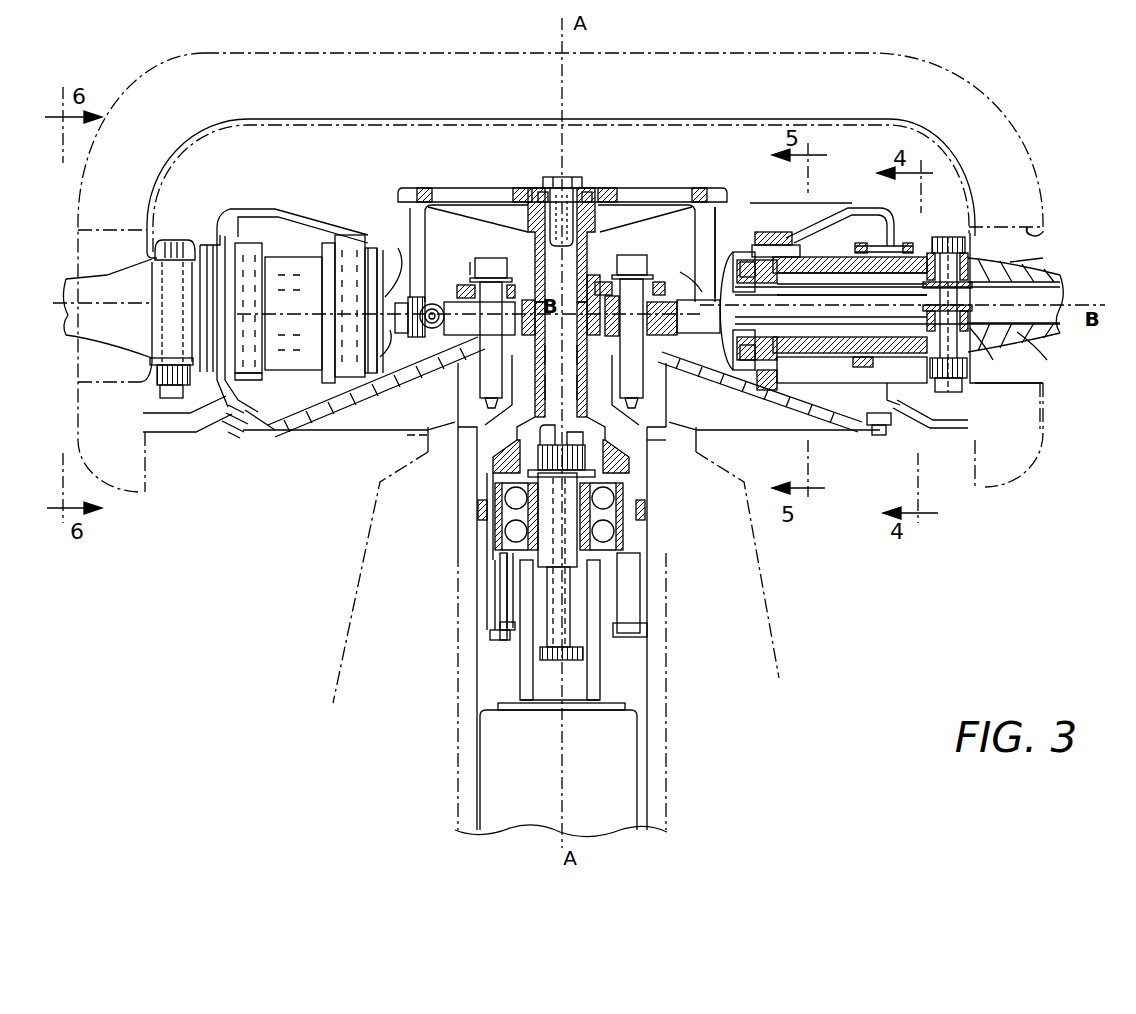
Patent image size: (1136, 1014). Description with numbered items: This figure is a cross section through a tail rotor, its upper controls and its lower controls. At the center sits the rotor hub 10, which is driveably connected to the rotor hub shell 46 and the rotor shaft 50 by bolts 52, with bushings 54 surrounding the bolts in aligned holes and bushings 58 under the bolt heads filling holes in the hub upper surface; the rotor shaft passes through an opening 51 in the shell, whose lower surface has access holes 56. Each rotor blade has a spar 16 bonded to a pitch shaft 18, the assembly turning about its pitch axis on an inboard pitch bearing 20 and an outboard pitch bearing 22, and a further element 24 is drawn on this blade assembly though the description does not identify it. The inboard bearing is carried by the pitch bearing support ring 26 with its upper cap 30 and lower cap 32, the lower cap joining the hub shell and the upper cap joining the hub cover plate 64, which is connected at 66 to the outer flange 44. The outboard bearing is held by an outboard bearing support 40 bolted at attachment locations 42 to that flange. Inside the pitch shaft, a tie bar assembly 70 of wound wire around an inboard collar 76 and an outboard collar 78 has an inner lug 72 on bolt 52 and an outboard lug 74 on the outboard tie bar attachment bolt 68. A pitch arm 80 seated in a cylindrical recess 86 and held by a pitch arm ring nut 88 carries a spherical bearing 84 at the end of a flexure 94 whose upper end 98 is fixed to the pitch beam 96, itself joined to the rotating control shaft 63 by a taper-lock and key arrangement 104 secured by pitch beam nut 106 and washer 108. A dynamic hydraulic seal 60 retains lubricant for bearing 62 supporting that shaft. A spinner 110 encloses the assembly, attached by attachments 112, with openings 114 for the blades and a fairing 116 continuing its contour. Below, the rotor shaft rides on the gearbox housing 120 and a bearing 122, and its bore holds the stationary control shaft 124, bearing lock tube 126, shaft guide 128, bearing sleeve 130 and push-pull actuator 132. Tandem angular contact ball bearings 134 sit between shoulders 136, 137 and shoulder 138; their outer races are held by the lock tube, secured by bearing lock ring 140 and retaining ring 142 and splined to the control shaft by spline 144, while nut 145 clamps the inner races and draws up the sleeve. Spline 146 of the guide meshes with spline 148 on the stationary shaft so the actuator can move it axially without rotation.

The rotor hub 10 is at (526, 340).
The spar 16 is at (1058, 345).
The pitch shaft 18 is at (824, 366).
The inboard pitch bearing 20 is at (750, 262).
The outboard pitch bearing 22 is at (930, 237).
The wheel hub assembly 24 is at (292, 257).
The pitch bearing support ring 26 is at (746, 231).
The upper cap 30 is at (770, 245).
The lower cap 32 is at (812, 372).
The outboard bearing support 40 is at (250, 378).
The attachment locations 42 is at (900, 225).
The outer flange 44 is at (905, 432).
The rotor hub shell 46 is at (272, 432).
The rotor shaft 50 is at (470, 508).
The opening 51 is at (425, 442).
The bolts 52 is at (478, 254).
The bushings 54 is at (460, 390).
The holes 56 is at (712, 402).
The bushings 58 is at (462, 282).
The dynamic hydraulic seal 60 is at (588, 292).
The bearing 62 is at (590, 345).
The rotating control shaft 63 is at (517, 438).
The hub cover plate 64 is at (768, 225).
The connection 66 is at (858, 210).
The outboard tie bar attachment bolt 68 is at (180, 240).
The tie bar assembly 70 is at (442, 322).
The inner lug 72 is at (561, 387).
The outboard lug 74 is at (1005, 352).
The inboard collar 76 is at (662, 375).
The outboard collar 78 is at (988, 305).
The pitch arm 80 is at (405, 258).
The spherical bearing 84 is at (403, 386).
The cylindrical recess 86 is at (752, 393).
The pitch arm ring nut 88 is at (852, 286).
The flexure 94 is at (415, 215).
The pitch beam 96 is at (663, 188).
The upper end of flexure 98 is at (425, 190).
The taper-lock and key arrangement 104 is at (535, 188).
The pitch beam nut 106 is at (566, 177).
The washer 108 is at (590, 198).
The spinner 110 is at (716, 64).
The attachments 112 is at (234, 440).
The openings 114 is at (1035, 236).
The fairing 116 is at (1030, 262).
The gearbox housing 120 is at (345, 632).
The bearing 122 is at (492, 507).
The stationary control shaft 124 is at (535, 647).
The bearing lock tube 126 is at (490, 617).
The shaft guide 128 is at (545, 690).
The bearing sleeve 130 is at (595, 583).
The push-pull actuator 132 is at (490, 755).
The tandem angular contact ball bearings 134 is at (622, 530).
The shoulder 136 is at (505, 474).
The shoulder 137 is at (520, 553).
The shoulder 138 is at (505, 487).
The bearing lock ring 140 is at (497, 643).
The retaining ring 142 is at (640, 652).
The spline 144 is at (488, 605).
The nut 145 is at (600, 462).
The spline 146 is at (580, 610).
The spline 148 is at (605, 662).